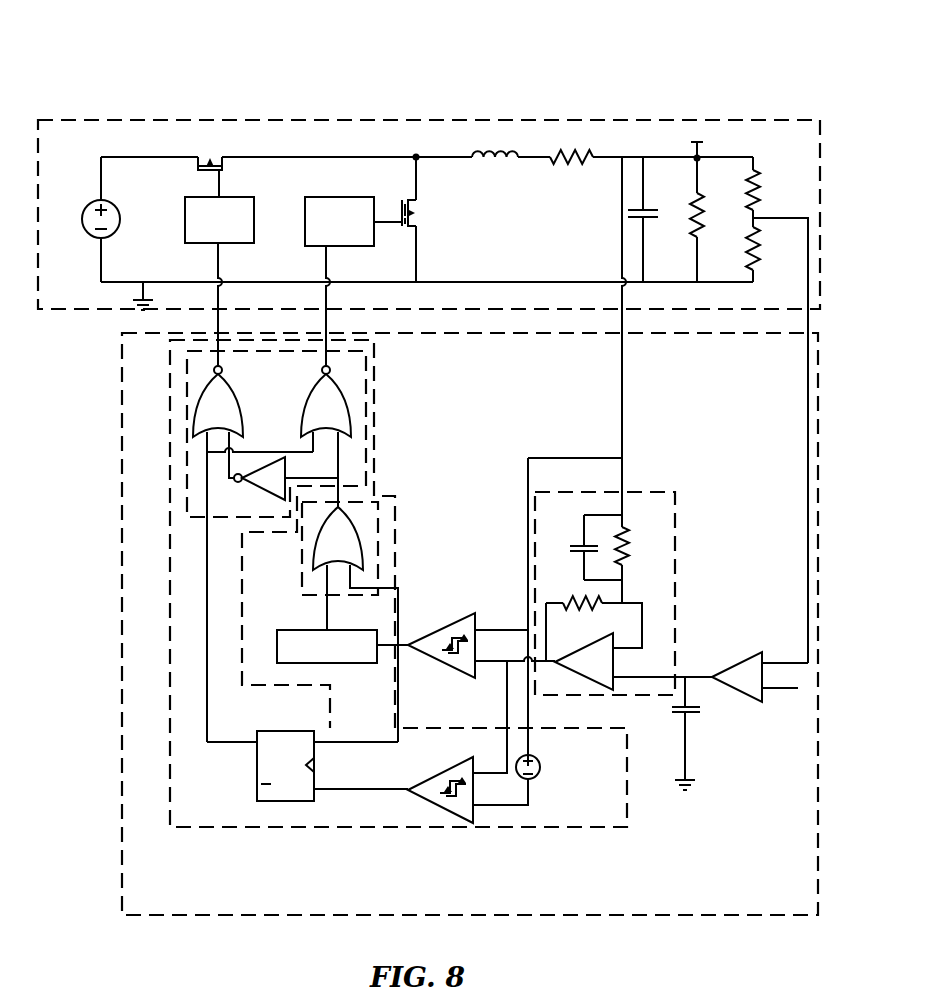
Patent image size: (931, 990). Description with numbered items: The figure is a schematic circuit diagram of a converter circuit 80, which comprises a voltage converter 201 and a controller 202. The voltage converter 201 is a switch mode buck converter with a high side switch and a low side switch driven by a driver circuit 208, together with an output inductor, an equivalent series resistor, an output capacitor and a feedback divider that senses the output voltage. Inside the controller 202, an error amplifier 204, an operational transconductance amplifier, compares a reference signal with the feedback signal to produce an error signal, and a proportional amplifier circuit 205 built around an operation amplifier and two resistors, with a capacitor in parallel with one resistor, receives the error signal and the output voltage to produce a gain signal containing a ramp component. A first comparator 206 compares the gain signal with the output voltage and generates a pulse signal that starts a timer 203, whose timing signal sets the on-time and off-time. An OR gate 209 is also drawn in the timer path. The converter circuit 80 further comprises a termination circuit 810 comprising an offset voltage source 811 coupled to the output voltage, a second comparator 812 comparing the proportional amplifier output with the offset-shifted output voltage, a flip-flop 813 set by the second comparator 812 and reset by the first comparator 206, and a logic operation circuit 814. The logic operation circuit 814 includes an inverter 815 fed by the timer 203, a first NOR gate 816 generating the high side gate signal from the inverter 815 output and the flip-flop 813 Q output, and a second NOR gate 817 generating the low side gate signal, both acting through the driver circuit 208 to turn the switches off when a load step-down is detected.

The converter circuit 80 is at (514, 92).
The voltage converter 201 is at (331, 120).
The controller 202 is at (122, 485).
The timer 203 is at (343, 663).
The error amplifier 204 is at (748, 697).
The proportional amplifier circuit 205 is at (676, 590).
The first comparator 206 is at (443, 623).
The driver circuit 208 is at (254, 220).
The OR gate 209 is at (380, 549).
The termination circuit 810 is at (343, 827).
The offset voltage source 811 is at (538, 777).
The second comparator 812 is at (445, 807).
The flip-flop 813 is at (257, 762).
The logic operation circuit 814 is at (370, 376).
The inverter 815 is at (242, 490).
The first NOR gate 816 is at (323, 402).
The second NOR gate 817 is at (220, 405).